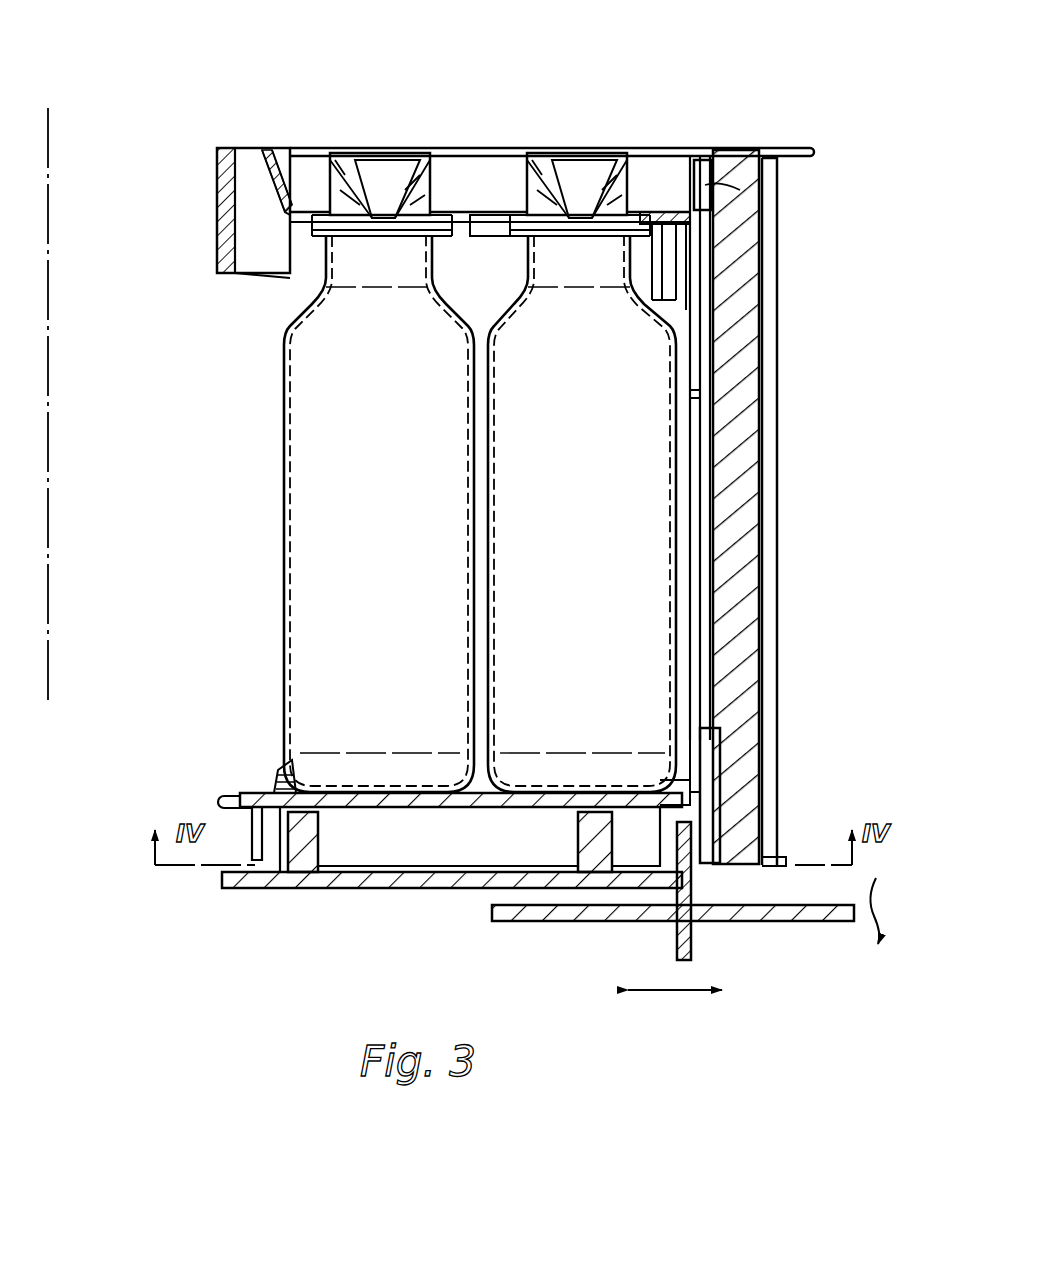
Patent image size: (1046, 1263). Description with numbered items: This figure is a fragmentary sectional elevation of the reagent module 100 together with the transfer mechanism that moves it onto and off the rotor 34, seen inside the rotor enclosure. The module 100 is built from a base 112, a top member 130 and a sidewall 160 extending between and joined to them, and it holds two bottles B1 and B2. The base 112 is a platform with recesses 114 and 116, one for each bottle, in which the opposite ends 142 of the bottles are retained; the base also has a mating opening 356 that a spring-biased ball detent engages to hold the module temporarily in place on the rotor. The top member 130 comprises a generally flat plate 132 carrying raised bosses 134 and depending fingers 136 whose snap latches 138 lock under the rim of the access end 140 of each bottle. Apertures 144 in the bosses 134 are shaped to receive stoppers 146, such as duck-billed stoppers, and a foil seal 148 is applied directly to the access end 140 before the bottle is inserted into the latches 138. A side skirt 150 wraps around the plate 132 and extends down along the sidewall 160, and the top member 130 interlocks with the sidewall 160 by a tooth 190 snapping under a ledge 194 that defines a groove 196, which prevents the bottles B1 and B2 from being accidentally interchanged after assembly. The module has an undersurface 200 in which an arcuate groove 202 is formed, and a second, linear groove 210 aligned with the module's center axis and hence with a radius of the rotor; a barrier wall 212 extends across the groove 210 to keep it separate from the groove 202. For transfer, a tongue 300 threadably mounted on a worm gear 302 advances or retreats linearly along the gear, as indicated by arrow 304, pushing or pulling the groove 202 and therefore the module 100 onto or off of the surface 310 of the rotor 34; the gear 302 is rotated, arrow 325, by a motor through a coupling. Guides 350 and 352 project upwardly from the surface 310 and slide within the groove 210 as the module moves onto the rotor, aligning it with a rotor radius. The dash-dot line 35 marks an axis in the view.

The reagent module 100 is at (594, 68).
The top member 130 is at (188, 182).
The side skirt 150 is at (217, 230).
The flat plate 132 is at (450, 185).
The raised bosses 134 is at (326, 168).
The stoppers 146 is at (388, 152).
The depending fingers 136 is at (480, 215).
The apertures 144 is at (650, 212).
The tooth 190 is at (682, 210).
The ledge 194 is at (706, 152).
The groove 196 is at (778, 190).
The access end 140 is at (340, 262).
The foil seal 148 is at (374, 238).
The snap latches 138 is at (500, 265).
The sidewall 160 is at (736, 490).
The axis 35 is at (48, 560).
The guide 350 is at (302, 822).
The guide 352 is at (580, 828).
The opposite ends 142 is at (364, 790).
The barrier wall 212 is at (632, 792).
The recess 114 is at (278, 775).
The mating opening 356 is at (262, 790).
The base 112 is at (232, 789).
The recess 116 is at (722, 762).
The arcuate groove 202 is at (714, 830).
The undersurface 200 is at (155, 852).
The rotor 34 is at (250, 893).
The linear groove 210 is at (436, 845).
The surface 310 is at (470, 868).
The worm gear 302 is at (545, 921).
The tongue 300 is at (678, 886).
The arrow 325 is at (870, 905).
The arrow 304 is at (678, 996).
The bottle B1 is at (379, 514).
The bottle B2 is at (582, 514).